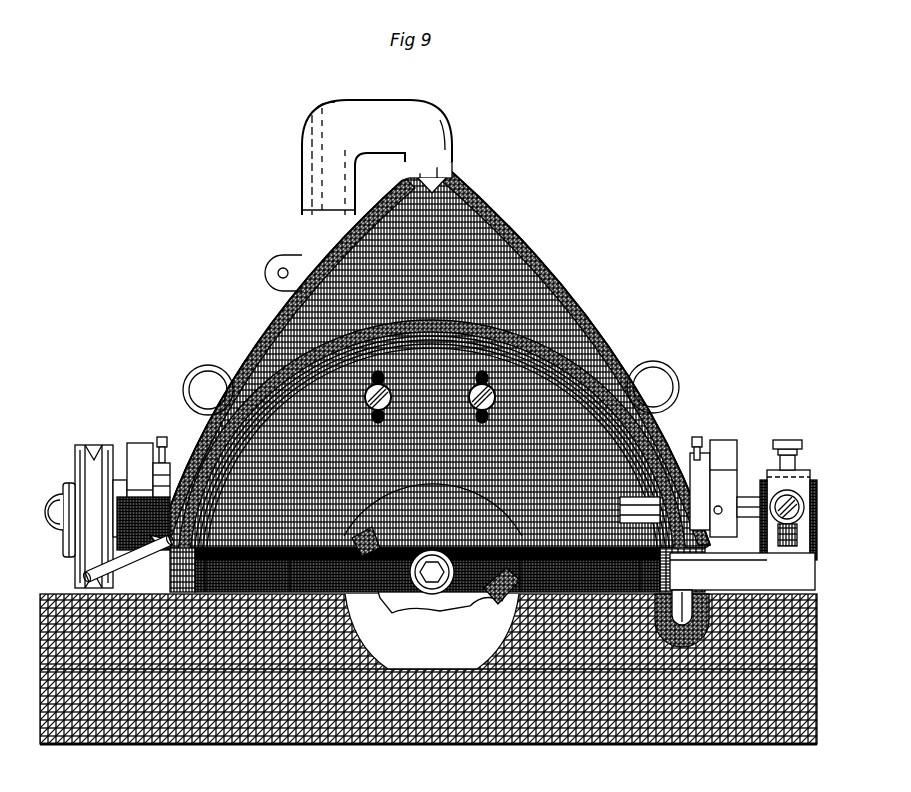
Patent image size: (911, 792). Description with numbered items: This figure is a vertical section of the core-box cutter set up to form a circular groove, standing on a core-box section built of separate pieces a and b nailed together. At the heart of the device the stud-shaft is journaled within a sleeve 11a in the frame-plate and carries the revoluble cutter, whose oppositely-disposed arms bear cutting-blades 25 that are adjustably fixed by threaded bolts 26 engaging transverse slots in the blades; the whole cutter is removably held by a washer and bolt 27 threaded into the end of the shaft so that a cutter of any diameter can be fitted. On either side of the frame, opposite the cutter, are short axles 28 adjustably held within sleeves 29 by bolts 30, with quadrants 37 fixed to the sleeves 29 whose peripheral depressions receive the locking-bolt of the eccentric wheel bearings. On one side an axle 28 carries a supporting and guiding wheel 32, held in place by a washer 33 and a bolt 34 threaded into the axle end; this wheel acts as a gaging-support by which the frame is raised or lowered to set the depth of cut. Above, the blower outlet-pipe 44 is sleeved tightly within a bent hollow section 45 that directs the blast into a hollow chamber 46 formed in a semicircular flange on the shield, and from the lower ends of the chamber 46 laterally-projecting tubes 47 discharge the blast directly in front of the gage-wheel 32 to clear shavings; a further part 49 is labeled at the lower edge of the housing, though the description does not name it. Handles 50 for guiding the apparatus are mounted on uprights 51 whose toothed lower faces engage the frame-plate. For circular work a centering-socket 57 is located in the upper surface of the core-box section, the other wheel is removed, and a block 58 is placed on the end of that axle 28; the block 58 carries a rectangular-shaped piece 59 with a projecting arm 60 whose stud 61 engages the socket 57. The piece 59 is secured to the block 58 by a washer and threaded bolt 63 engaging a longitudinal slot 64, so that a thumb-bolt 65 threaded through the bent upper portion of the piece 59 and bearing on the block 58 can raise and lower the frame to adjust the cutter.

The sleeve 11a is at (420, 612).
The cutting-blades 25 is at (392, 570).
The threaded bolts 26 is at (383, 543).
The bolt 27 is at (436, 572).
The axles 28 is at (640, 510).
The sleeves 29 is at (130, 478).
The bolts 30 is at (162, 436).
The supporting and guiding wheels 32 is at (80, 457).
The washers 33 is at (64, 496).
The bolts 34 is at (56, 518).
The quadrants 37 is at (140, 456).
The outlet-pipe 44 is at (330, 247).
The bent hollow section 45 is at (377, 157).
The hollow chamber 46 is at (435, 377).
The laterally-projecting pipes or tubes 47 is at (132, 555).
The rim 49 is at (673, 568).
The handles 50 is at (212, 366).
The uprights 51 is at (210, 389).
The centering-socket 57 is at (692, 625).
The block 58 is at (812, 490).
The rectangular-shaped piece 59 is at (790, 578).
The projecting arm 60 is at (742, 582).
The stud 61 is at (704, 590).
The threaded bolt 63 is at (787, 490).
The longitudinal slot 64 is at (789, 546).
The thumb-bolt 65 is at (795, 441).
The piece of the core-box section a is at (428, 669).
The piece of the core-box section b is at (583, 706).